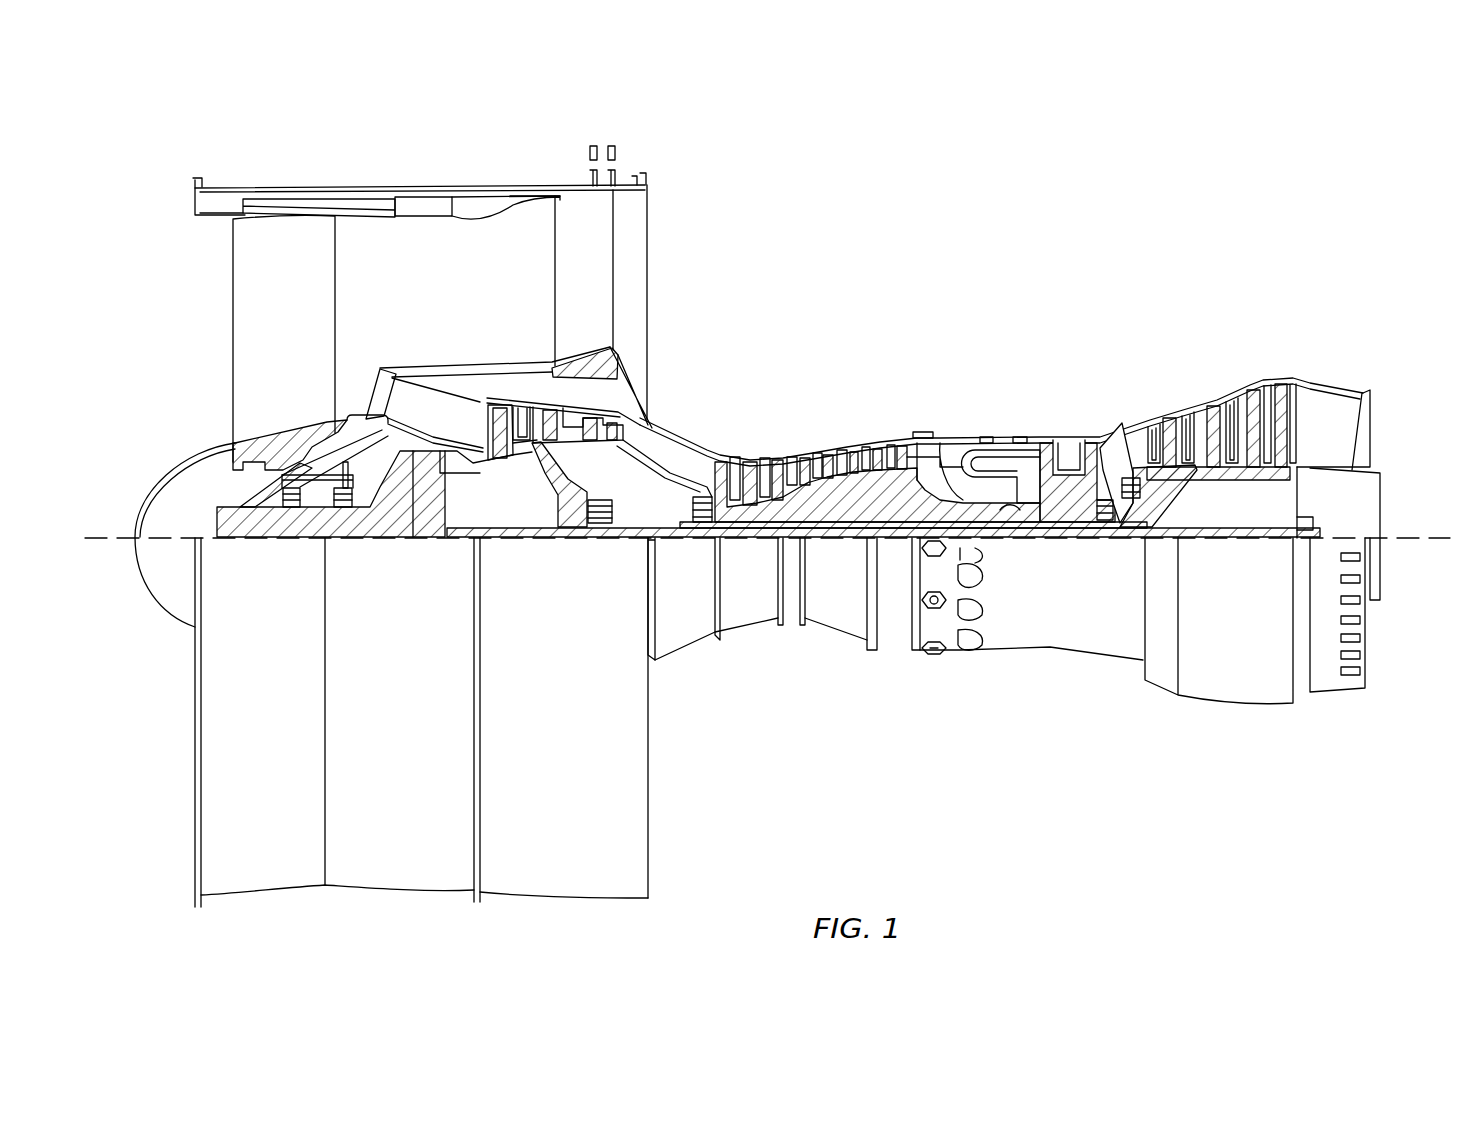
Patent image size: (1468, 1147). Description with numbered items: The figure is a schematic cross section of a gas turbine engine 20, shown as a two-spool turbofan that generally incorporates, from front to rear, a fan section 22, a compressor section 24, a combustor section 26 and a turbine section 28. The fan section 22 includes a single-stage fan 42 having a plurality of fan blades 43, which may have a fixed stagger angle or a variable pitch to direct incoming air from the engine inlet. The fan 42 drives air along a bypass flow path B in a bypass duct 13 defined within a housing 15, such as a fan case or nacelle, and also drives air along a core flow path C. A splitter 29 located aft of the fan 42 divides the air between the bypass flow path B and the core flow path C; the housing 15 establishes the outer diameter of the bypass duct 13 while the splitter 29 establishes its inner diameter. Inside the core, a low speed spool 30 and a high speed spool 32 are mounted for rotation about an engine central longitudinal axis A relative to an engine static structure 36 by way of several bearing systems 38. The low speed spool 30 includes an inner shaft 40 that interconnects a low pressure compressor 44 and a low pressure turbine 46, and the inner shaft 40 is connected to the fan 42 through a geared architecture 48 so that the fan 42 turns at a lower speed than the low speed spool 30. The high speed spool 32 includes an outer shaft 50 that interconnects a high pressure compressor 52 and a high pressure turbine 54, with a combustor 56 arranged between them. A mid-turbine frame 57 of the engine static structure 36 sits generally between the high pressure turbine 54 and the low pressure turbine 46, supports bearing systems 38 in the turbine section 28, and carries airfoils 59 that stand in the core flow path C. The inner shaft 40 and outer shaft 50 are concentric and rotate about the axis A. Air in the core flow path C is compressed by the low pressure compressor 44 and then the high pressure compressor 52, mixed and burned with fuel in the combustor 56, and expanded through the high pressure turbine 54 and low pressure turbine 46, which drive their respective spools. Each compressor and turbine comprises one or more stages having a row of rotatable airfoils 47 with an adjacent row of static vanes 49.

The gas turbine engine 20 is at (1228, 228).
The fan section 22 is at (342, 183).
The housing 15 is at (430, 188).
The bypass duct 13 is at (495, 197).
The fan 42 is at (286, 339).
The fan blades 43 is at (322, 340).
The splitter 29 is at (393, 378).
The rotatable airfoils 47 is at (495, 406).
The static vanes 49 is at (519, 412).
The low pressure compressor 44 is at (578, 415).
The compressor section 24 is at (700, 436).
The high pressure compressor 52 is at (815, 490).
The high speed spool 32 is at (896, 500).
The combustor section 26 is at (962, 422).
The combustor 56 is at (990, 465).
The high pressure turbine 54 is at (1070, 437).
The mid-turbine frame 57 is at (1120, 458).
The turbine section 28 is at (1170, 380).
The low pressure turbine 46 is at (1225, 396).
The airfoils 59 is at (1155, 488).
The geared architecture 48 is at (430, 508).
The bearing systems 38 is at (607, 525).
The inner shaft 40 is at (665, 538).
The low speed spool 30 is at (852, 542).
The engine static structure 36 is at (895, 648).
The outer shaft 50 is at (1020, 518).
The engine central longitudinal axis A is at (1440, 530).
The bypass flow path B is at (378, 262).
The core flow path C is at (428, 410).